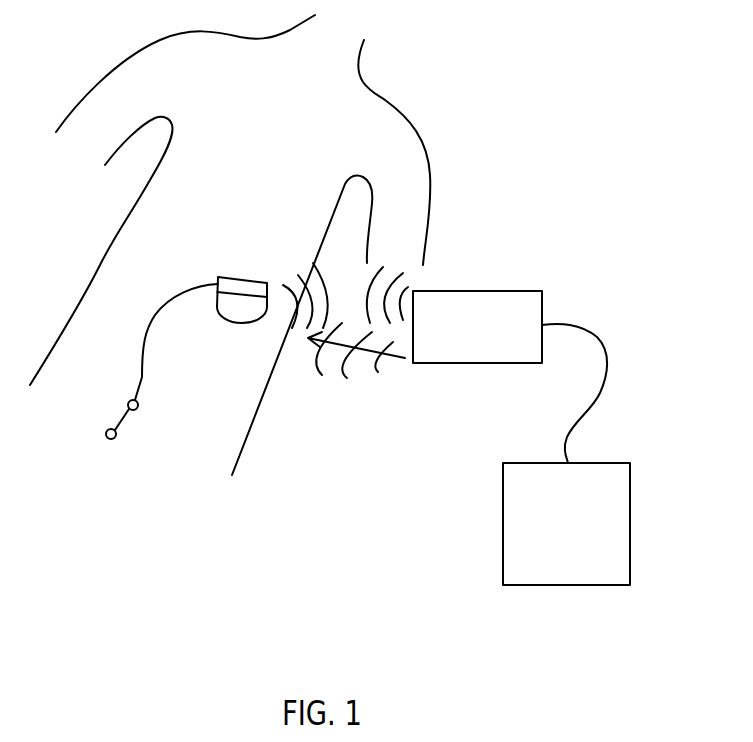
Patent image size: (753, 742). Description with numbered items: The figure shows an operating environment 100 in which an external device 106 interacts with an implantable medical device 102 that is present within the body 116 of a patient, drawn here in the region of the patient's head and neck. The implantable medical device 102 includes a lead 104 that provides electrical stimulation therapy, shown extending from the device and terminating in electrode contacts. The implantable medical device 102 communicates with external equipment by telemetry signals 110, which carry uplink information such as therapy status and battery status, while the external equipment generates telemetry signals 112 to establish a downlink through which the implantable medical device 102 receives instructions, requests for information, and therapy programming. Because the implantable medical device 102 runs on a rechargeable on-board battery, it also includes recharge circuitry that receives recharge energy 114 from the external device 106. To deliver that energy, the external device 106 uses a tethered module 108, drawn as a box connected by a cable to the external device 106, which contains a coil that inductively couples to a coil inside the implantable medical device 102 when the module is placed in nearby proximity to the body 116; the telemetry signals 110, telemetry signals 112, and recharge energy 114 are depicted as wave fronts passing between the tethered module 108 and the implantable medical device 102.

The operating environment 100 is at (550, 81).
The implantable medical device 102 is at (248, 312).
The lead 104 is at (142, 377).
The external device 106 is at (630, 560).
The tethered module 108 is at (472, 291).
The telemetry signals 110 is at (289, 258).
The telemetry signals 112 is at (408, 247).
The recharge energy 114 is at (379, 391).
The body 116 is at (388, 104).